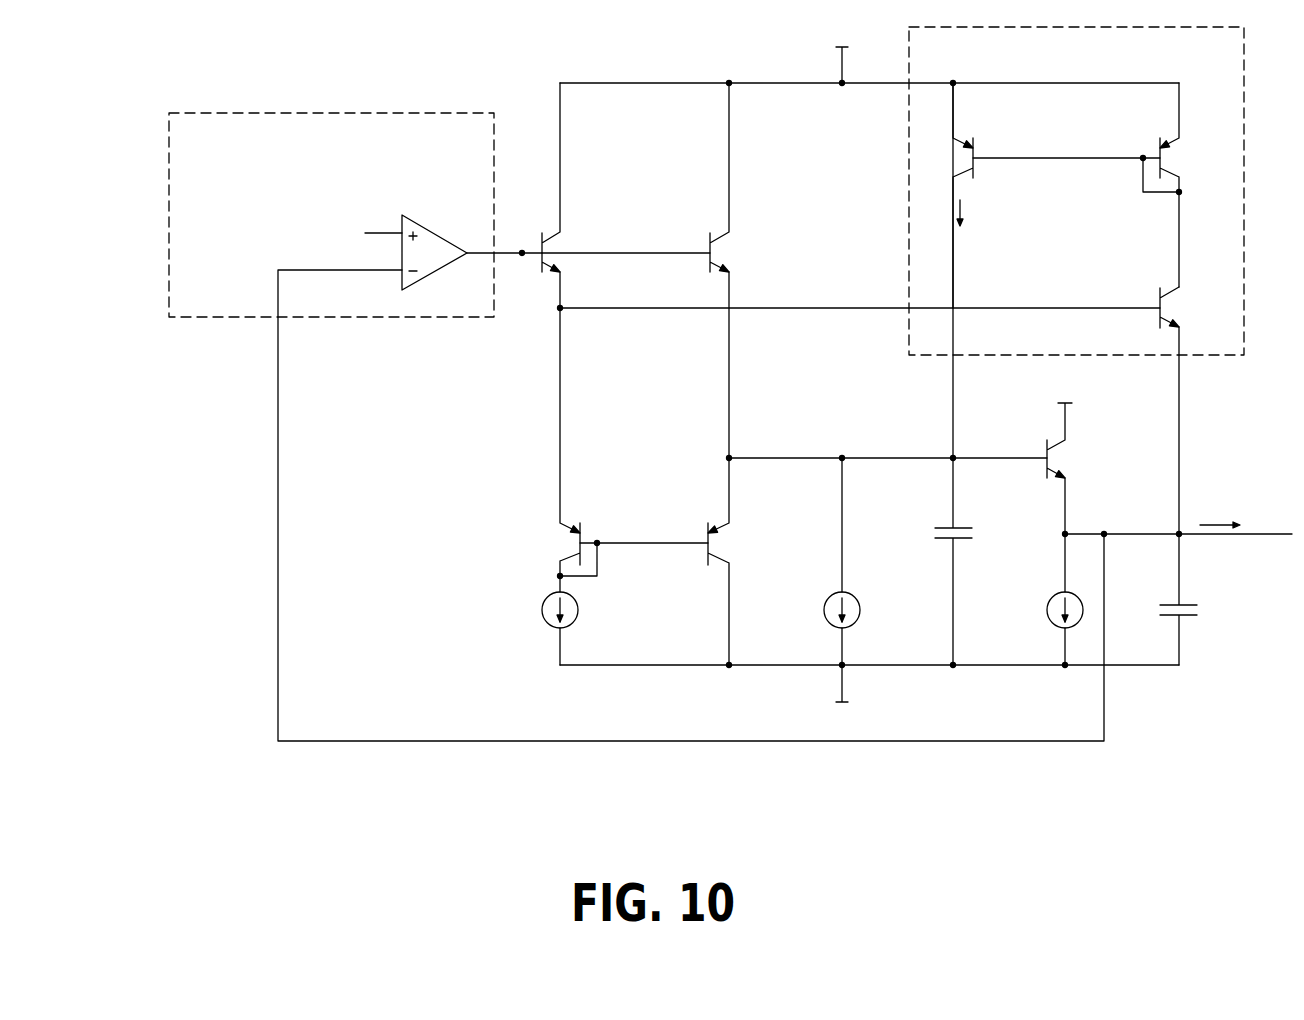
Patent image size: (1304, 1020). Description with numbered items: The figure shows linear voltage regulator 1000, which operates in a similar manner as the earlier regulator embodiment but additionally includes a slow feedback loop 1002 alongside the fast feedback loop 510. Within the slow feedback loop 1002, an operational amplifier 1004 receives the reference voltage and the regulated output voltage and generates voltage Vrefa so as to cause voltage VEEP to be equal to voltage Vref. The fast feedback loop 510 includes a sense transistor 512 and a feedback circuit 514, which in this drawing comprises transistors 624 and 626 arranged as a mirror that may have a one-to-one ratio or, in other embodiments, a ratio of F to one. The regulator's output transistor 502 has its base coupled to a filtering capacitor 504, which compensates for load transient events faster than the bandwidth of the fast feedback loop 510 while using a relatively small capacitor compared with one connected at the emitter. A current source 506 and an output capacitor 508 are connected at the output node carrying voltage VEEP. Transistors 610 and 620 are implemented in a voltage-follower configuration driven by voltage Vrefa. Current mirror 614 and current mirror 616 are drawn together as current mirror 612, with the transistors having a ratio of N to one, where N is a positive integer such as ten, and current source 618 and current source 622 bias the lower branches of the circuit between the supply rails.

The linear voltage regulator 1000 is at (77, 82).
The feedback loop 1002 is at (424, 113).
The operational amplifier 1004 is at (410, 219).
The feedback loop 510 is at (1244, 225).
The sense transistor 512 is at (1160, 290).
The feedback circuit 514 is at (1077, 206).
The output transistor 502 is at (1047, 445).
The filtering capacitor 504 is at (938, 528).
The current source 506 is at (1049, 622).
The output capacitor 508 is at (1190, 605).
The transistor 610 is at (546, 237).
The current mirror 612 is at (654, 490).
The current mirror 614 is at (581, 534).
The current mirror 616 is at (718, 540).
The current source 618 is at (576, 614).
The transistor 620 is at (710, 240).
The leakage current source 622 is at (857, 614).
The transistor 624 is at (971, 148).
The transistor 626 is at (1156, 148).